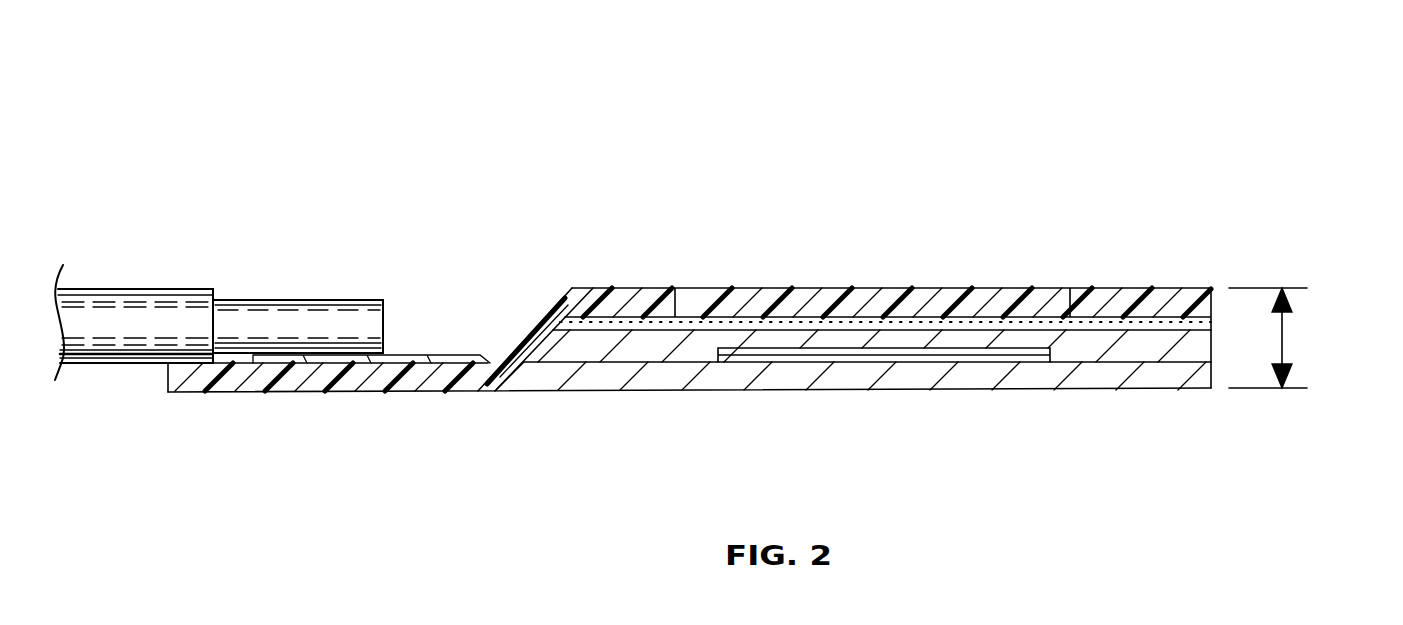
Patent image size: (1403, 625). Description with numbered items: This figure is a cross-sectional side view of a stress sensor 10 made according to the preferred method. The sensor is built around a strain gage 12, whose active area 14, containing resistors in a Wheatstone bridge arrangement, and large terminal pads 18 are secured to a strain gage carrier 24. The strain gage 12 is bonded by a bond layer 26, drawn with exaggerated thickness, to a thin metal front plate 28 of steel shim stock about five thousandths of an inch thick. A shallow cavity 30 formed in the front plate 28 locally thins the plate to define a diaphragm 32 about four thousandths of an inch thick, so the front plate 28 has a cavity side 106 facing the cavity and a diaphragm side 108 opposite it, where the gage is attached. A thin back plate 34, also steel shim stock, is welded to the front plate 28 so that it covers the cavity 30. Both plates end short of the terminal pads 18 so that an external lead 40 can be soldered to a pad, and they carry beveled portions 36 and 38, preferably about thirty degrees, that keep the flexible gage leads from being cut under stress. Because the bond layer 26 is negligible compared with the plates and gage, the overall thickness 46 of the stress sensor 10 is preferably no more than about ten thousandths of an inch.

The stress sensor 10 is at (503, 108).
The strain gage 12 is at (1100, 288).
The active area 14 is at (950, 296).
The terminal pads 18 is at (412, 352).
The strain gage carrier 24 is at (208, 375).
The bond layer 26 is at (1214, 322).
The front plate 28 is at (1195, 342).
The cavity 30 is at (758, 353).
The diaphragm 32 is at (888, 340).
The back plate 34 is at (1197, 374).
The beveled portion 36 is at (550, 338).
The beveled portion 38 is at (520, 370).
The external lead 40 is at (270, 320).
The thickness 46 is at (1282, 333).
The cavity side 106 is at (668, 363).
The diaphragm side 108 is at (614, 330).